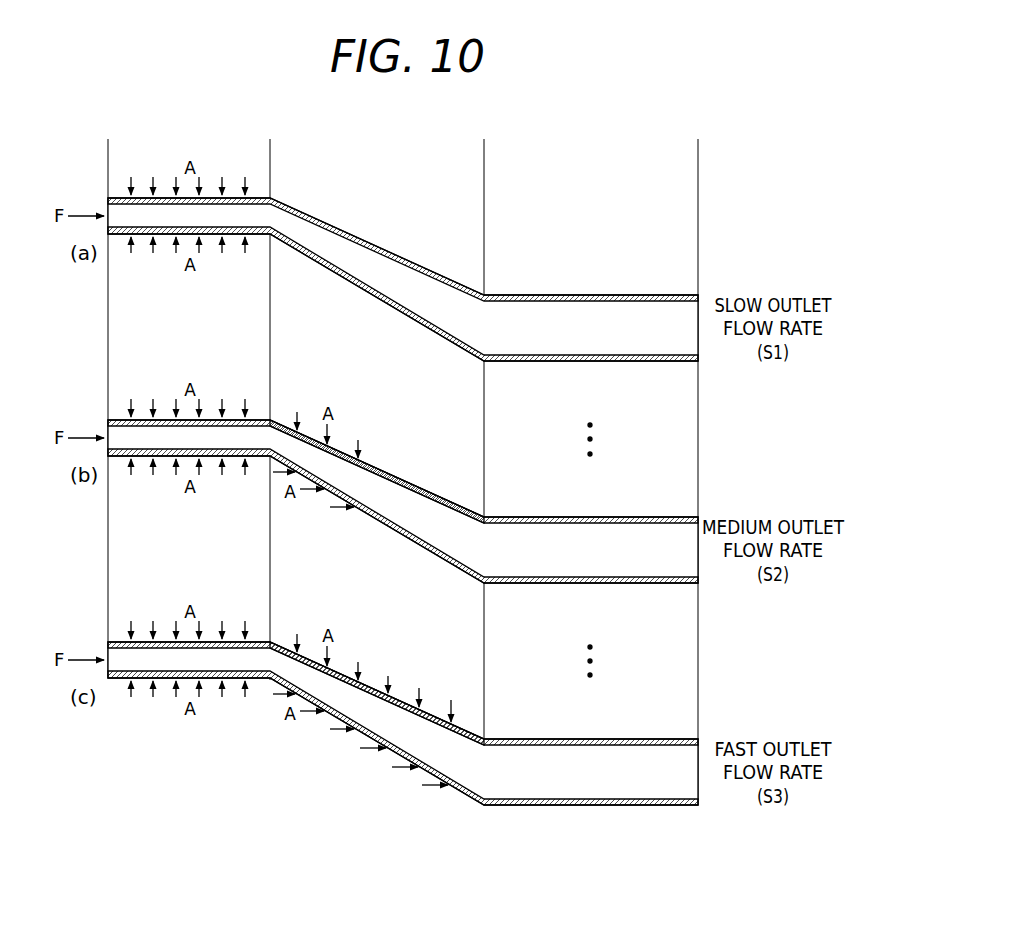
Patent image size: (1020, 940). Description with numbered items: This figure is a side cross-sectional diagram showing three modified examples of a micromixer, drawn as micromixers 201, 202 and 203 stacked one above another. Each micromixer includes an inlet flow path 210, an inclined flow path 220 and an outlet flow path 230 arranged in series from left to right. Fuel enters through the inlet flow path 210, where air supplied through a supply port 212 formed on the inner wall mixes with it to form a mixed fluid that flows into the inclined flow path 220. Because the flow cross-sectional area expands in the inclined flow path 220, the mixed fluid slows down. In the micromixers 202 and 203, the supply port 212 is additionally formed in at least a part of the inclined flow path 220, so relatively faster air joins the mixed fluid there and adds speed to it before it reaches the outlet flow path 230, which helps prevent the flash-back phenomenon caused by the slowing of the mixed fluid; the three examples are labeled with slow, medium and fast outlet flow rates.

The micromixer 201 is at (411, 244).
The micromixer 202 is at (411, 466).
The micromixer 203 is at (411, 688).
The inlet flow path 210 is at (108, 139).
The inclined flow path 220 is at (270, 139).
The outlet flow path 230 is at (484, 139).
The supply port 212 is at (358, 458).